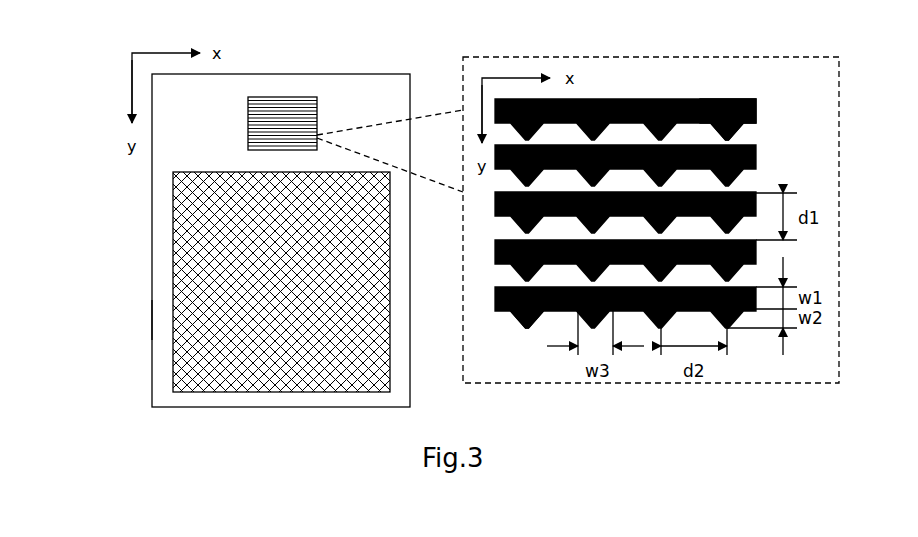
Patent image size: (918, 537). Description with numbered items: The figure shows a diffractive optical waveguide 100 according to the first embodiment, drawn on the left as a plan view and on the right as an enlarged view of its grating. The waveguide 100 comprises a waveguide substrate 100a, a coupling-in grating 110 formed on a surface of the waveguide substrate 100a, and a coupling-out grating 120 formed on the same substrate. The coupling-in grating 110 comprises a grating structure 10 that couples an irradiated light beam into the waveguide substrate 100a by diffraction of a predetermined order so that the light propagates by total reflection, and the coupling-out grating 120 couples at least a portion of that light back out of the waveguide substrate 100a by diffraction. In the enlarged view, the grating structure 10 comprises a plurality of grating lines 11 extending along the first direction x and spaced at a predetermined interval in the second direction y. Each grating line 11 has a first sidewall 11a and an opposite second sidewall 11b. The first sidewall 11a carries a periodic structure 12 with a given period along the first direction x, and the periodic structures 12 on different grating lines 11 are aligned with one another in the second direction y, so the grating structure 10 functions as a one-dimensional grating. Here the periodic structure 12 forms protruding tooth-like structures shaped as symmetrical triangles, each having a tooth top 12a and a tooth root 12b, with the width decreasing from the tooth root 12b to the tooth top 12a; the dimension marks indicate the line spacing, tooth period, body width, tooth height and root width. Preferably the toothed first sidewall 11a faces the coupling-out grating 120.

The diffractive optical waveguide 100 is at (272, 50).
The waveguide substrate 100a is at (152, 325).
The coupling-in grating 110 is at (248, 128).
The coupling-out grating 120 is at (173, 253).
The grating structure 10 is at (606, 50).
The grating line 11 is at (642, 99).
The first sidewall 11a is at (748, 126).
The second sidewall 11b is at (718, 96).
The periodic structure 12 is at (527, 337).
The tooth top 12a is at (526, 280).
The tooth root 12b is at (505, 311).